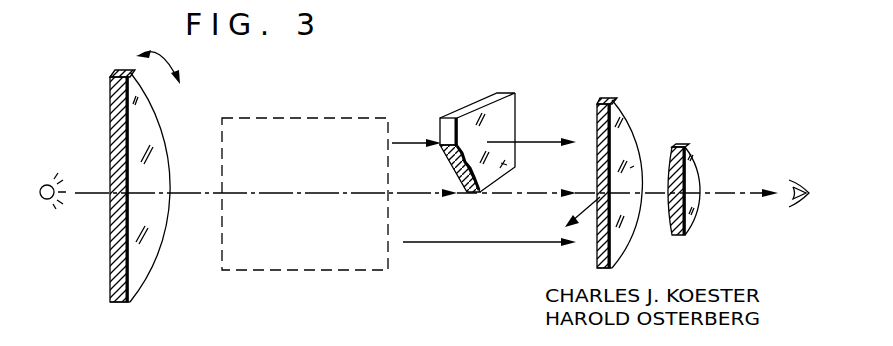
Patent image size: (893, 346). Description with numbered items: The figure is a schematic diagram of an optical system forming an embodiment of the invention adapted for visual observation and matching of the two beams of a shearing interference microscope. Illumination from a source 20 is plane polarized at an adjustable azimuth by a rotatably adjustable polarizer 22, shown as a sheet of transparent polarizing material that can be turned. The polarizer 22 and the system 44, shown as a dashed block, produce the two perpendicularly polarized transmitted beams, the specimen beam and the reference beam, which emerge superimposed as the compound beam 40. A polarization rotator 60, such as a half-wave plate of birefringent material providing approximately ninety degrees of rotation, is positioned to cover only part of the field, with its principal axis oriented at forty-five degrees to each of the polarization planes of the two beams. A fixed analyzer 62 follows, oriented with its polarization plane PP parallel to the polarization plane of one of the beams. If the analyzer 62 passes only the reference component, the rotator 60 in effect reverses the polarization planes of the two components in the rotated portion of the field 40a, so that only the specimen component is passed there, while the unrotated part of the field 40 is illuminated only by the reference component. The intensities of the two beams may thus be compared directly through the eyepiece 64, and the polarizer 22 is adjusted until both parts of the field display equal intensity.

The source 20 is at (46, 184).
The rotatably adjustable polarizer 22 is at (143, 262).
The system 44 is at (269, 282).
The compound beam 40 is at (442, 198).
The rotated portion of the field 40a is at (531, 134).
The polarization rotator 60 is at (468, 110).
The fixed analyzer 62 is at (624, 112).
The eyepiece 64 is at (693, 166).
The polarization plane PP is at (568, 215).